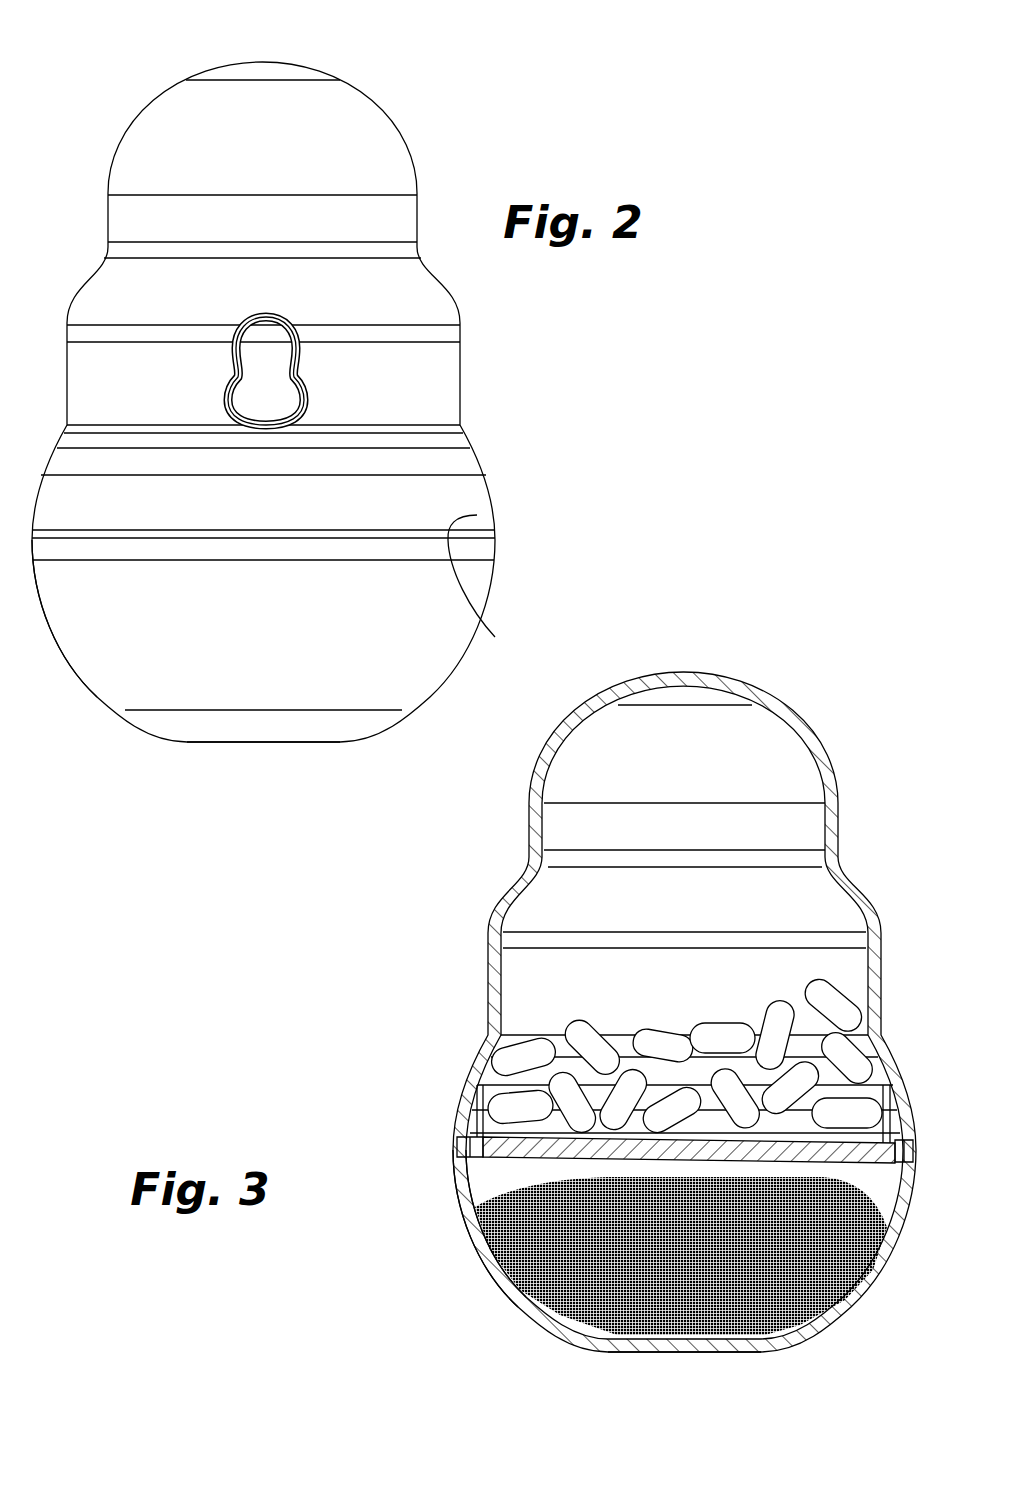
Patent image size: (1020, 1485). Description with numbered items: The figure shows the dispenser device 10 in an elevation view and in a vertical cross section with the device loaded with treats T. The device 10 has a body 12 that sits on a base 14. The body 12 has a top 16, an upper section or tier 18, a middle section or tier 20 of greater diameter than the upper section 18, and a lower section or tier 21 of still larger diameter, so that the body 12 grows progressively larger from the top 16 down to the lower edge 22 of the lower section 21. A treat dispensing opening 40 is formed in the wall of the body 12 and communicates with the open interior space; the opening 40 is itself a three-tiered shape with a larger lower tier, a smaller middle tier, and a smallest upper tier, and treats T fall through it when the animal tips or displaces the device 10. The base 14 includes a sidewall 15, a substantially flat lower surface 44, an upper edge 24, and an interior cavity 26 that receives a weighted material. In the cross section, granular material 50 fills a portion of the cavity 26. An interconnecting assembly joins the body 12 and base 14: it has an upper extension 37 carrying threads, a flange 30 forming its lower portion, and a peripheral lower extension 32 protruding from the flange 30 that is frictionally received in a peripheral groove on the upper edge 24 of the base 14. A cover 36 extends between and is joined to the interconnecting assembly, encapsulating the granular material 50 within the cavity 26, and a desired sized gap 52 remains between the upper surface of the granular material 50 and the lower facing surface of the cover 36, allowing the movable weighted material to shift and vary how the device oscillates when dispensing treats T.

In FIG. 2, the dispenser device 10 is at (510, 124).
In FIG. 3, the dispenser device 10 is at (810, 686).
In FIG. 2, the body 12 is at (470, 294).
In FIG. 3, the body 12 is at (456, 845).
In FIG. 2, the base 14 is at (493, 686).
In FIG. 3, the base 14 is at (430, 1231).
In FIG. 2, the sidewall 15 is at (272, 651).
In FIG. 3, the sidewall 15 is at (495, 1258).
In FIG. 2, the top 16 is at (294, 72).
In FIG. 3, the top 16 is at (683, 672).
In FIG. 2, the upper section or tier 18 is at (392, 128).
In FIG. 3, the upper section or tier 18 is at (540, 757).
In FIG. 2, the middle section or tier 20 is at (462, 377).
In FIG. 3, the middle section or tier 20 is at (495, 907).
In FIG. 2, the lower section or tier 21 is at (490, 487).
In FIG. 3, the lower section or tier 21 is at (472, 1070).
In FIG. 2, the lower edge 22 is at (477, 515).
In FIG. 2, the upper edge 24 is at (492, 586).
In FIG. 3, the interior cavity 26 is at (547, 1170).
In FIG. 2, the flange 30 is at (477, 532).
In FIG. 3, the flange 30 is at (457, 1138).
In FIG. 3, the peripheral lower extension 32 is at (460, 1150).
In FIG. 3, the cover 36 is at (755, 1167).
In FIG. 3, the upper extension 37 is at (503, 1152).
In FIG. 2, the treat dispensing opening 40 is at (253, 381).
In FIG. 3, the treat dispensing opening 40 is at (493, 1000).
In FIG. 2, the lower surface 44 is at (290, 743).
In FIG. 3, the lower surface 44 is at (680, 1343).
In FIG. 3, the granular material 50 is at (643, 1294).
In FIG. 3, the gap 52 is at (670, 1167).
In FIG. 3, the treats T is at (530, 1037).